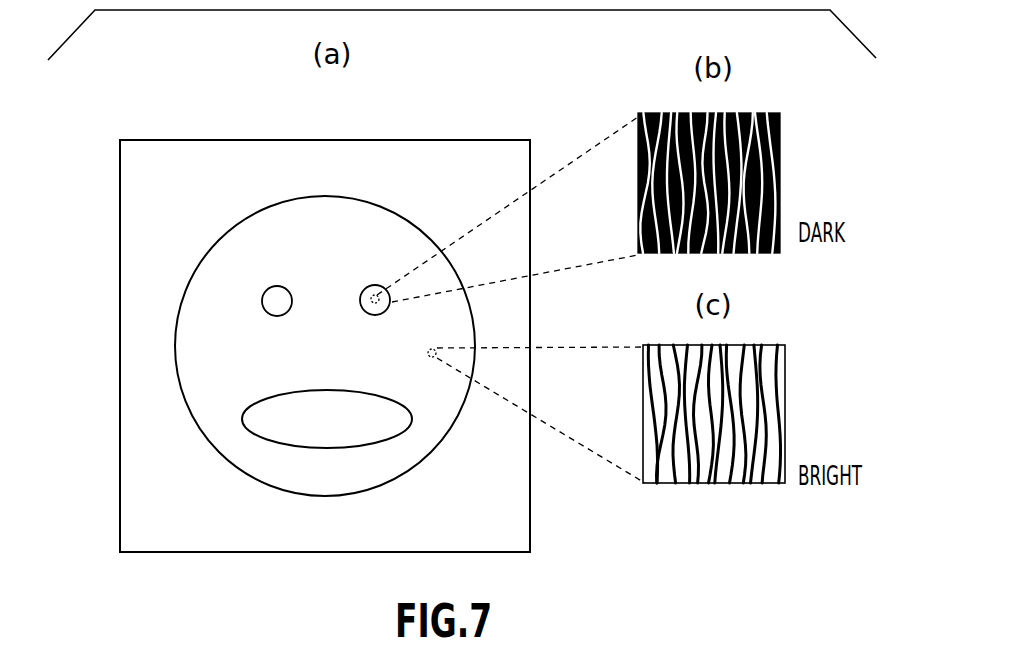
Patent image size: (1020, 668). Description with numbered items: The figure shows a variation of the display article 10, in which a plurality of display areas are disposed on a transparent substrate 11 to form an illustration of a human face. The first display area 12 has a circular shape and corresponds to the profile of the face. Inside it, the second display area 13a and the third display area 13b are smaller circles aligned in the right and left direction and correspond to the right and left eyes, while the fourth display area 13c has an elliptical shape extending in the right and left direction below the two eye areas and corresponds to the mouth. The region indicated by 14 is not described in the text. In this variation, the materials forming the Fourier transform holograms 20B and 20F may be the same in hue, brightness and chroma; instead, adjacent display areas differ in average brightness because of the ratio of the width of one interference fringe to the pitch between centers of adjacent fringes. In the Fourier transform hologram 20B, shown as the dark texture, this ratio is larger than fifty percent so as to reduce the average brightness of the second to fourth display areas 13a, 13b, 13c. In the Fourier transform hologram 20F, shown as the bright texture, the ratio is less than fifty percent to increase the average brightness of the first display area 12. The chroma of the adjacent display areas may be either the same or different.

The display article 10 is at (135, 61).
The transparent substrate 11 is at (152, 322).
The first display area 12 is at (222, 388).
The second display area 13a is at (277, 287).
The third display area 13b is at (372, 285).
The fourth display area 13c is at (383, 423).
The image outline 14 is at (309, 366).
The Fourier transform hologram 20B is at (786, 163).
The Fourier transform hologram 20F is at (788, 392).